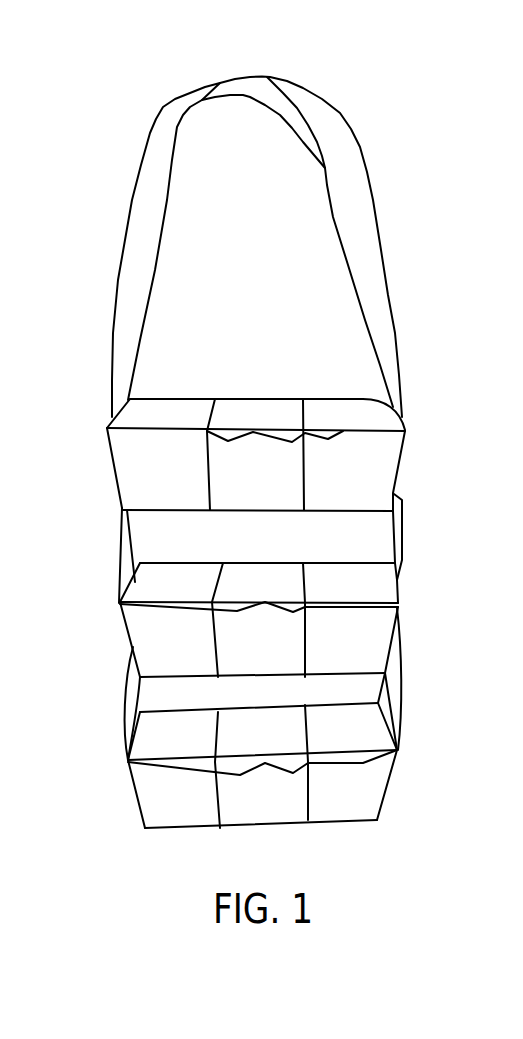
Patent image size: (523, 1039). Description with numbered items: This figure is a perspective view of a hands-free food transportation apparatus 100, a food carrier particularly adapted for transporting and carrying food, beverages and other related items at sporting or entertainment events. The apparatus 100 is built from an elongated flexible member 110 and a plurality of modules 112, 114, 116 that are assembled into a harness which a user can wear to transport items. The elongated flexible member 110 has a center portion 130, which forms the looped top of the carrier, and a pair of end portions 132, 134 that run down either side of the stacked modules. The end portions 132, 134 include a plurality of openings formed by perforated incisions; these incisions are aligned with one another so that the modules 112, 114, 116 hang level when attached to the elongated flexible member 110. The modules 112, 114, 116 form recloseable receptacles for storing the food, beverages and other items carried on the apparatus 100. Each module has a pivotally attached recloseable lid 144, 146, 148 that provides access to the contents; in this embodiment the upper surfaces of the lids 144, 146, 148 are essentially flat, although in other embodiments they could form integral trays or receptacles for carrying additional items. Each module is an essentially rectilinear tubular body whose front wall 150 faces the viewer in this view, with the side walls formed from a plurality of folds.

The food transportation apparatus 100 is at (365, 86).
The elongated flexible member 110 is at (150, 133).
The center portion 130 is at (253, 83).
The module 112 is at (113, 457).
The module 114 is at (125, 623).
The module 116 is at (135, 792).
The end portion 132 is at (125, 548).
The end portion 134 is at (400, 530).
The recloseable lid 144 is at (253, 403).
The recloseable lid 146 is at (250, 580).
The recloseable lid 148 is at (375, 727).
The front wall 150 is at (383, 455).